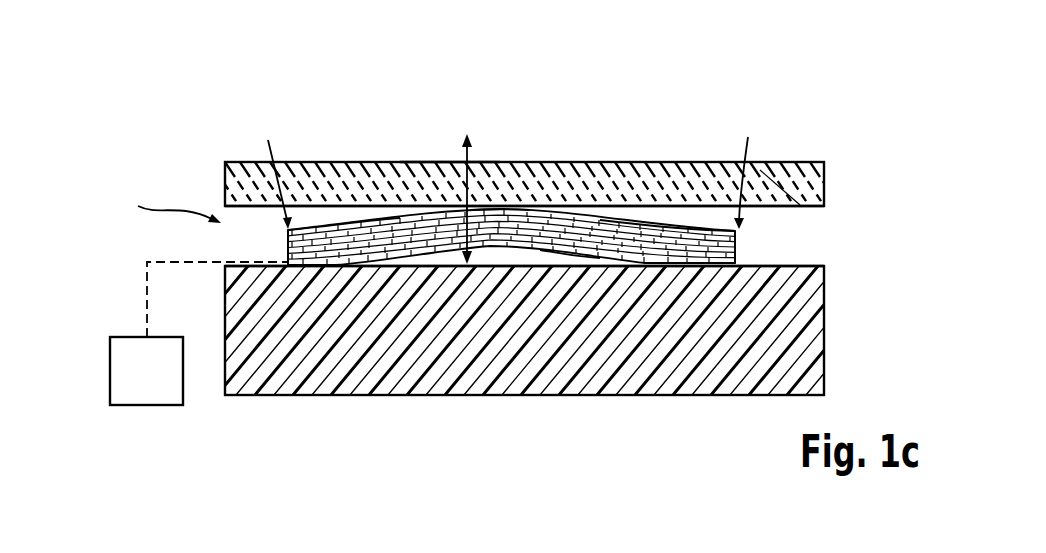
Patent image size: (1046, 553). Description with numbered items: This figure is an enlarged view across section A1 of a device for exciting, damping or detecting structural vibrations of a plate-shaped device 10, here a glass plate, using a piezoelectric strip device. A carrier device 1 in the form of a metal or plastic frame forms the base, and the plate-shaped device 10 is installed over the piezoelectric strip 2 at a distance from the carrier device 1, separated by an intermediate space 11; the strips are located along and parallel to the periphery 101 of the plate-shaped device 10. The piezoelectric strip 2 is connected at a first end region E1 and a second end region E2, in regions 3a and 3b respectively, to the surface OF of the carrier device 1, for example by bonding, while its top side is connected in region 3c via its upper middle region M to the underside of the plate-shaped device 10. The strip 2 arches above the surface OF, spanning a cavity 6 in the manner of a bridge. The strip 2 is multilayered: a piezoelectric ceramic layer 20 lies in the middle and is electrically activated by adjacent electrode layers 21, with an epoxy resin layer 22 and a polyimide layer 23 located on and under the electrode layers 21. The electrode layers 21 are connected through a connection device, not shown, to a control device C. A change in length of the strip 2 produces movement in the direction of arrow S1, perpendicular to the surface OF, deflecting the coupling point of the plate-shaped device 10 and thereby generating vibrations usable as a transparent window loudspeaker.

The carrier device 1 is at (825, 366).
The piezoelectric strip 2 is at (689, 211).
The region 3a is at (326, 266).
The region 3b is at (700, 264).
The region 3c is at (510, 206).
The cavity 6 is at (568, 262).
The plate-shaped device 10 is at (823, 178).
The periphery 101 is at (820, 188).
The intermediate space 11 is at (810, 215).
The piezoelectric ceramic layer 20 is at (736, 250).
The electrode layer 21 is at (288, 251).
The epoxy resin layer 22 is at (655, 256).
The polyimide layer 23 is at (385, 245).
The section A1 is at (163, 203).
The control device C is at (120, 388).
The first end region E1 is at (273, 171).
The second end region E2 is at (753, 169).
The upper middle region M is at (530, 206).
The surface OF is at (820, 256).
The arrow S1 is at (441, 162).